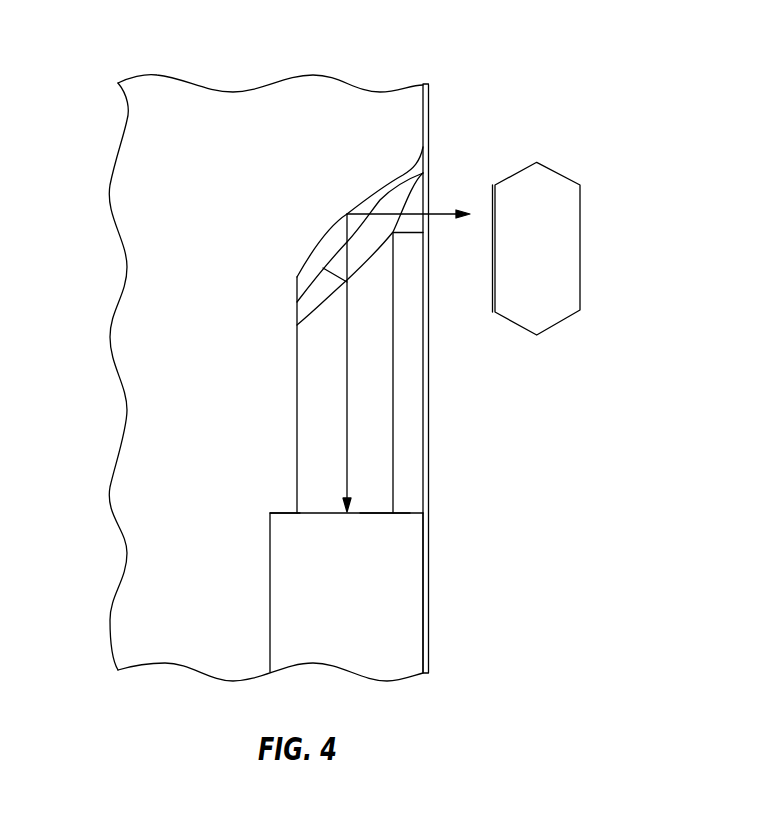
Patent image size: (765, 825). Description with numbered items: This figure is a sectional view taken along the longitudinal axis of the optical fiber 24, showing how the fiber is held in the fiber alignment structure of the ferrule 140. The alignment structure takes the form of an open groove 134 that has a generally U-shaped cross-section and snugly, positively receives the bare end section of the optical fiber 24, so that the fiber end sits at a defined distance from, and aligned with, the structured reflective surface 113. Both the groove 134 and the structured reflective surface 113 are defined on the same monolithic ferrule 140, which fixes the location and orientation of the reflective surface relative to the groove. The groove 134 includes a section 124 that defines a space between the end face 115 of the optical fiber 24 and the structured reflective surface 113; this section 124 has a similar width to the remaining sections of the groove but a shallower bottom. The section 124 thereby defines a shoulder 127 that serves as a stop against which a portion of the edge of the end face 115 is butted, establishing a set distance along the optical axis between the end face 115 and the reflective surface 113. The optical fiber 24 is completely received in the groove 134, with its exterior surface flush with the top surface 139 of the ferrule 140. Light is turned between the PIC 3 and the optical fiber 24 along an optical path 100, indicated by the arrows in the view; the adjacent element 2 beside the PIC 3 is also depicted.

The coating layer 2 is at (493, 283).
The PIC 3 is at (558, 248).
The optical fiber 24 is at (415, 593).
The optical path 100 is at (347, 377).
The structured reflective surface 113 is at (380, 195).
The end face 115 is at (375, 513).
The section 124 is at (373, 437).
The shoulder 127 is at (280, 515).
The open groove 134 is at (270, 593).
The top surface 139 is at (427, 113).
The ferrule 140 is at (130, 457).